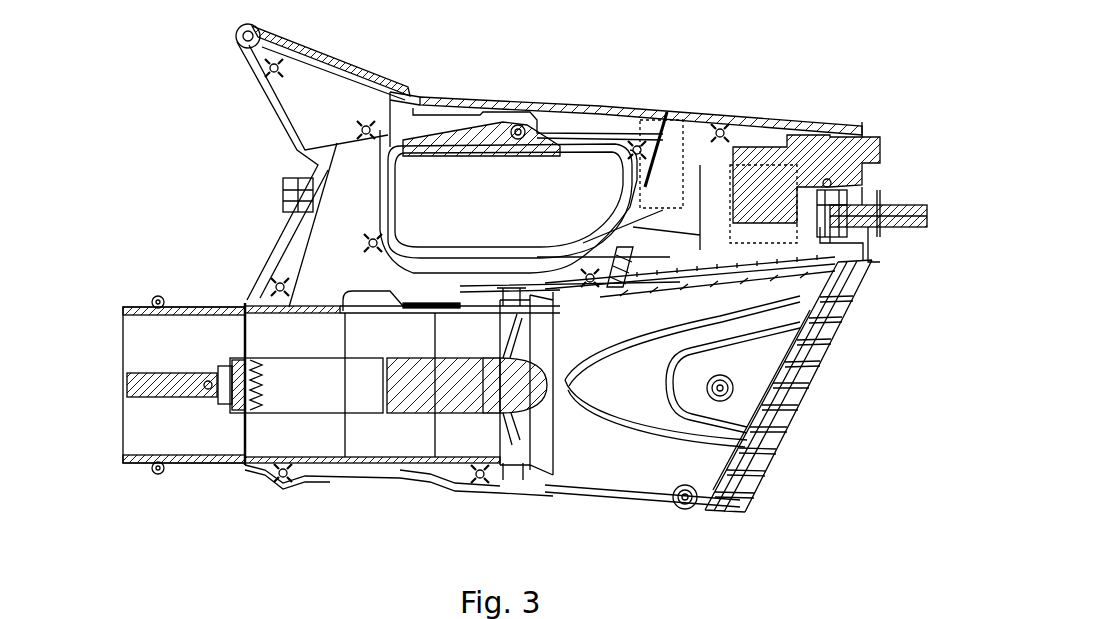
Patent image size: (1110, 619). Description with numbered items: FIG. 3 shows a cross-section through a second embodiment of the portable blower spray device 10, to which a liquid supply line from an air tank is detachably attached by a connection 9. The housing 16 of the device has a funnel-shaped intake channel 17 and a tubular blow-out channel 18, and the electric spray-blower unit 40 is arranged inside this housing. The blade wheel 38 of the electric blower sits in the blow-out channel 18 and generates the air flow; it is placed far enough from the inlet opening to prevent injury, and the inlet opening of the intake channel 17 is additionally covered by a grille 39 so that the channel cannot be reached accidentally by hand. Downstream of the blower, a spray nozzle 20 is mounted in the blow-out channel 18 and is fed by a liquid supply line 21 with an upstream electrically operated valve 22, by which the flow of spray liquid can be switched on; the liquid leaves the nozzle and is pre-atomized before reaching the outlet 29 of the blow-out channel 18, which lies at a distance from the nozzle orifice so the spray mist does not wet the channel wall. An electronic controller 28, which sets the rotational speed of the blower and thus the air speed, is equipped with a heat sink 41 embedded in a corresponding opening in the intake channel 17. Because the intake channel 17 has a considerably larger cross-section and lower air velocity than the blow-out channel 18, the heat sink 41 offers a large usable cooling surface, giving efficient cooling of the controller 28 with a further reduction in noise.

The blower spray device 10 is at (86, 564).
The connection 9 is at (880, 207).
The housing 16 is at (423, 487).
The intake channel 17 is at (657, 503).
The blow-out channel 18 is at (190, 460).
The spray nozzle 20 is at (125, 390).
The liquid supply line 21 is at (643, 188).
The electrically operated valve 22 is at (847, 147).
The electronic controller 28 is at (677, 232).
The outlet 29 is at (127, 345).
The blade wheel 38 is at (513, 430).
The grille 39 is at (803, 410).
The electric spray-blower unit 40 is at (330, 462).
The heat sink 41 is at (690, 278).